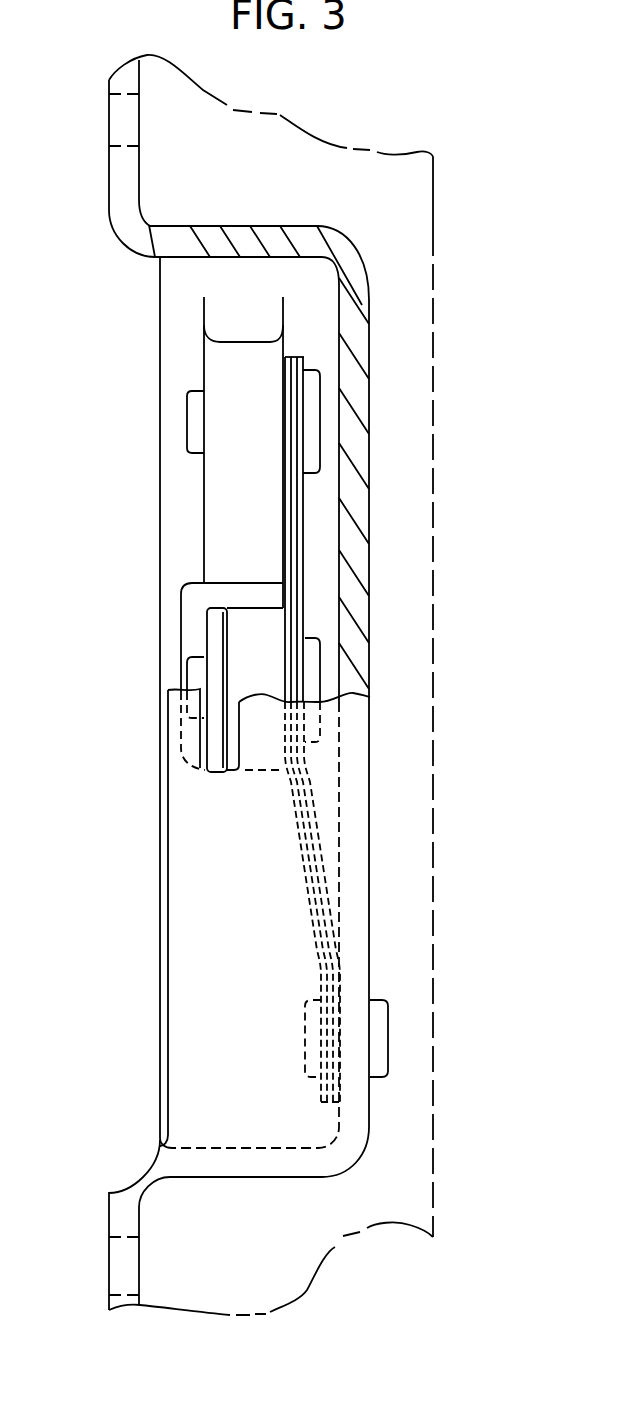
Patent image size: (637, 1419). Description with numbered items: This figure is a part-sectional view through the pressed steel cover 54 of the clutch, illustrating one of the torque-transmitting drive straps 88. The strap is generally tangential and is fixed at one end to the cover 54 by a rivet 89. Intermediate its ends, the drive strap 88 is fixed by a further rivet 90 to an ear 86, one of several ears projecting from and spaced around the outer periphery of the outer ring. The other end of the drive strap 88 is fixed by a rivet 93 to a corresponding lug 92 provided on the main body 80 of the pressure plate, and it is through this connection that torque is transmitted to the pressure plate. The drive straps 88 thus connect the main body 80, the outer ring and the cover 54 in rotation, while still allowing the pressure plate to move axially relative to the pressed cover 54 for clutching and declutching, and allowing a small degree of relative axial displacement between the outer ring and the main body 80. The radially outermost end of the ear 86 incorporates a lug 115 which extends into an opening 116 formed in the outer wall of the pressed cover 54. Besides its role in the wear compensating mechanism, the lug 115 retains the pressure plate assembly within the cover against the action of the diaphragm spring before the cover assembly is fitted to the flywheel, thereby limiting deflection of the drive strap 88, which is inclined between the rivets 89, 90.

The cover 54 is at (360, 524).
The main body 80 is at (204, 490).
The lug 92 is at (212, 368).
The drive strap 88 is at (322, 852).
The rivet 93 is at (312, 395).
The rivet 90 is at (312, 660).
The ear 86 is at (247, 620).
The opening 116 is at (189, 617).
The lug 115 is at (210, 728).
The rivet 89 is at (382, 1010).